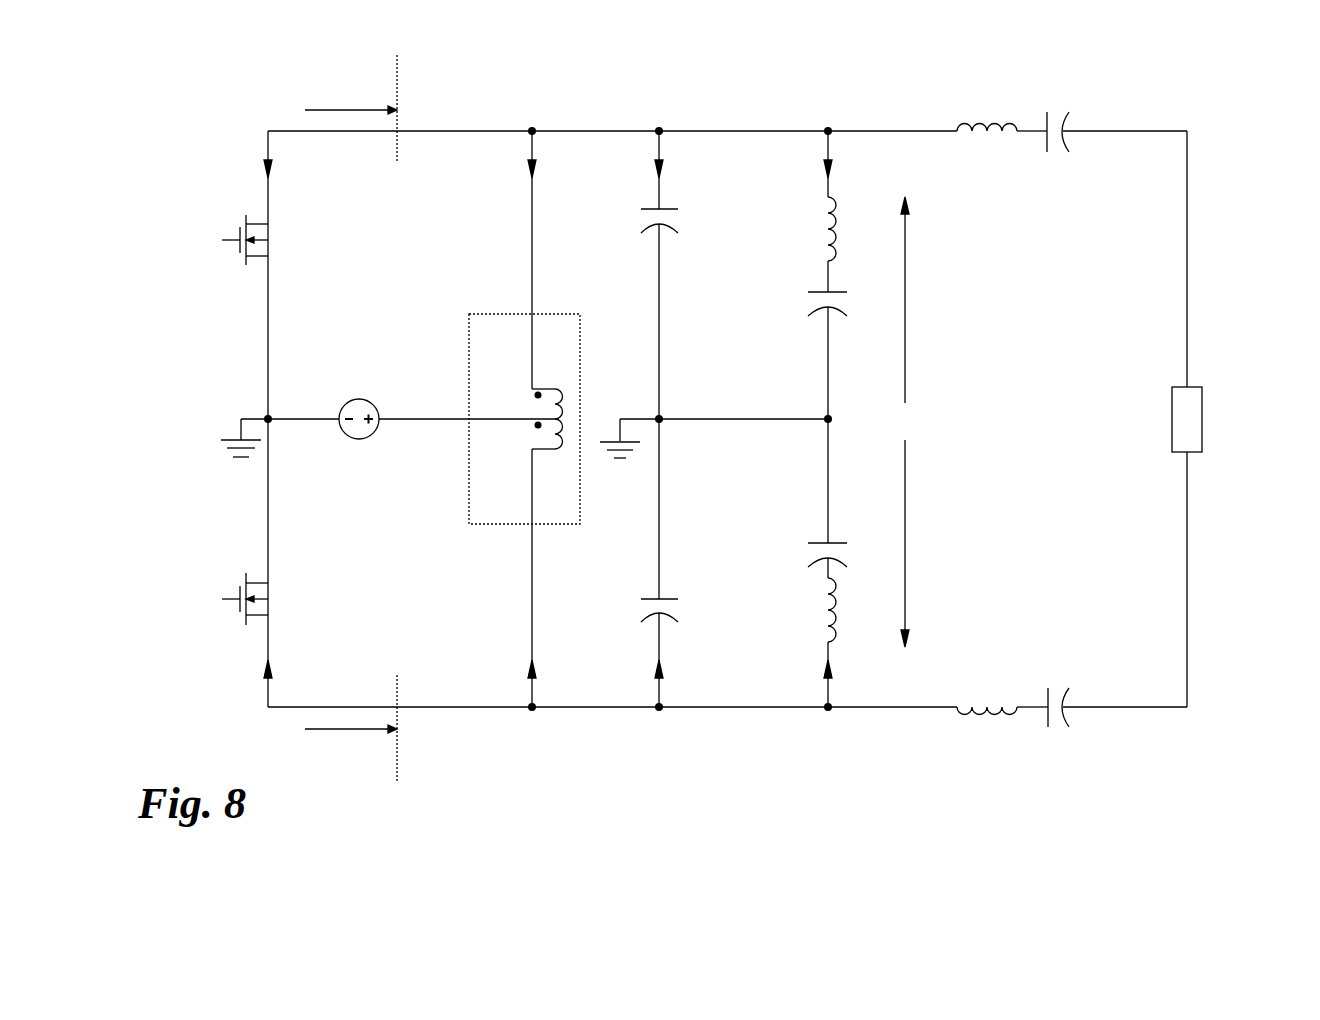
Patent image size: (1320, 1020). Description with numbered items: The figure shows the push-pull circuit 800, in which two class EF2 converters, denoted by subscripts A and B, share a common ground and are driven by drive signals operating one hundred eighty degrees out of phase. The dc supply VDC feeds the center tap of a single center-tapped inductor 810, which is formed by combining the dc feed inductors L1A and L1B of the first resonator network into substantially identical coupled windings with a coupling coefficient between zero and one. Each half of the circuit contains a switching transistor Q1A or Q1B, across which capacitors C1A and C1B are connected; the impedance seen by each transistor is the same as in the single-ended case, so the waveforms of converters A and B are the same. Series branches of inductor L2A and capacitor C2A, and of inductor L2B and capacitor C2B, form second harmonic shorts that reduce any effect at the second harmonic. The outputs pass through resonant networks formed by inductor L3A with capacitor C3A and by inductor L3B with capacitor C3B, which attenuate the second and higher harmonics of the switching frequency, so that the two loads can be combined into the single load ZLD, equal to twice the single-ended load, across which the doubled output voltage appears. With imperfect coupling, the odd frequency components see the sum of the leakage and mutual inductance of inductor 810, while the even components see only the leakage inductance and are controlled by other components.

The circuit 800 is at (852, 99).
The center-tapped inductor 810 is at (557, 524).
The transistor Q1A is at (236, 249).
The transistor Q1B is at (236, 587).
The dc feed inductor L1A is at (520, 402).
The dc feed inductor L1B is at (520, 438).
The capacitor C1A is at (630, 226).
The capacitor C1B is at (630, 610).
The inductor L2A is at (807, 229).
The inductor L2B is at (807, 610).
The capacitor C2A is at (802, 313).
The capacitor C2B is at (799, 540).
The inductor L3A is at (987, 147).
The inductor L3B is at (987, 690).
The capacitor C3A is at (1053, 149).
The capacitor C3B is at (1052, 689).
The load ZLD is at (1160, 433).
The dc supply voltage VDC is at (349, 430).